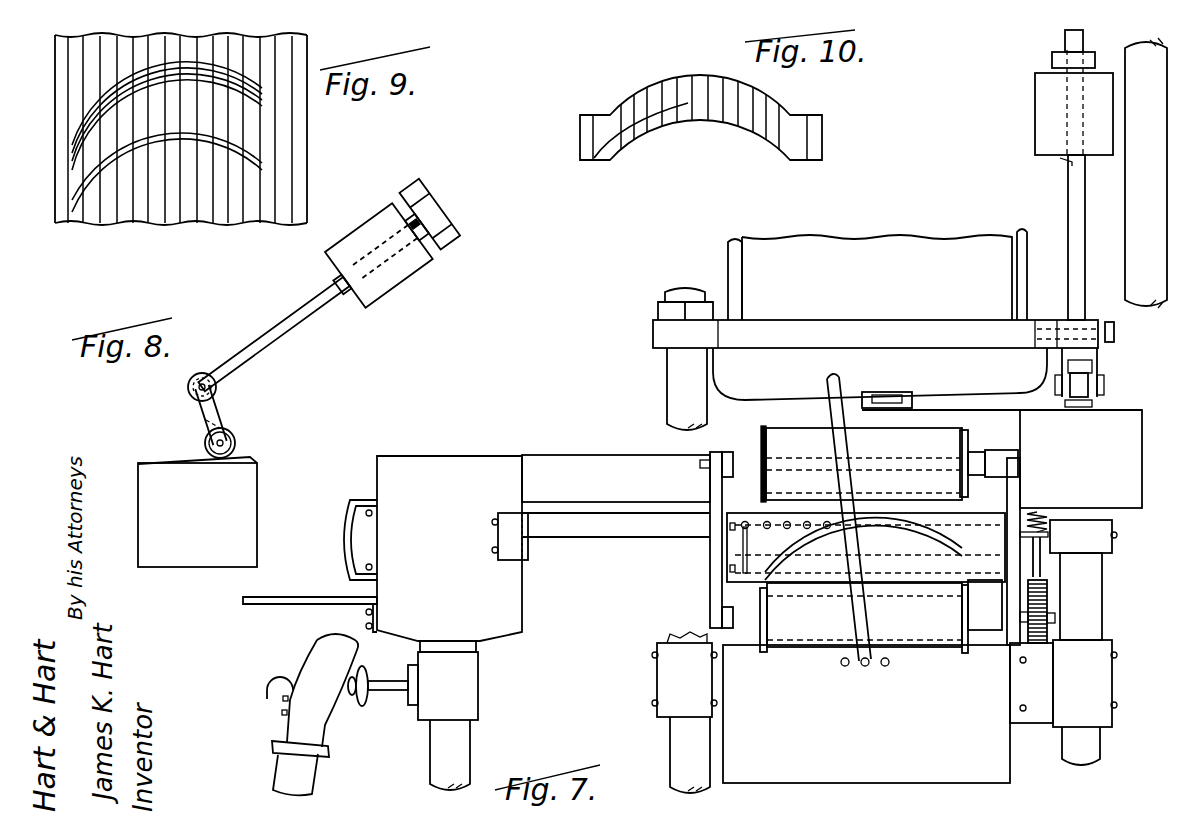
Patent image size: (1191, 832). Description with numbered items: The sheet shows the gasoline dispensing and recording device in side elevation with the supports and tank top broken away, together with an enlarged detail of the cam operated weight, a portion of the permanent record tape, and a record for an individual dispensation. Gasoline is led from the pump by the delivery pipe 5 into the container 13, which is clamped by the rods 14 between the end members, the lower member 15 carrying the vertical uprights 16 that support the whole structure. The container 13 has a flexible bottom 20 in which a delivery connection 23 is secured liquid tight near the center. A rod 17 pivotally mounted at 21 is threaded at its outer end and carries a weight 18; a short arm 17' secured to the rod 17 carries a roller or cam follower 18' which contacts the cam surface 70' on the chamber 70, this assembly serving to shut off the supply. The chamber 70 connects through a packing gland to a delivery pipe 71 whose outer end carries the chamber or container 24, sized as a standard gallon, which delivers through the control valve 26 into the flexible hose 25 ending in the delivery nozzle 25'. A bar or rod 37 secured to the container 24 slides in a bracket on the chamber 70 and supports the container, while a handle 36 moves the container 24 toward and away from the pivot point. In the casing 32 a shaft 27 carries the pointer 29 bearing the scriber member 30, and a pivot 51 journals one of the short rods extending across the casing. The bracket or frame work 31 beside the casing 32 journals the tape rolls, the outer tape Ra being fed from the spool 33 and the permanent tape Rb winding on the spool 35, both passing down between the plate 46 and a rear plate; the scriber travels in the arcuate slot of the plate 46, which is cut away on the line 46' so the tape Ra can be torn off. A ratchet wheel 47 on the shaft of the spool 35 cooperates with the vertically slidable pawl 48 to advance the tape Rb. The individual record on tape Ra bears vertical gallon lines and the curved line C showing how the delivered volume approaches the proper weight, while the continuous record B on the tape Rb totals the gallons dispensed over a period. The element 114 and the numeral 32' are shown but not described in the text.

In FIG. 9, the record B is at (78, 108).
In FIG. 9, the permanent record tape Rb is at (300, 155).
In FIG. 7, the permanent record tape Rb is at (798, 650).
In FIG. 10, the outer record tape Ra is at (616, 148).
In FIG. 7, the outer record tape Ra is at (912, 467).
In FIG. 10, the curved line C is at (670, 112).
In FIG. 7, the delivery pipe 5 is at (1125, 232).
In FIG. 7, the container 13 is at (745, 275).
In FIG. 7, the rods 14 is at (728, 268).
In FIG. 7, the post 114 is at (1022, 290).
In FIG. 7, the end member 15 is at (662, 336).
In FIG. 7, the vertical uprights 16 is at (668, 405).
In FIG. 8, the rod 17 is at (274, 334).
In FIG. 7, the rod 17 is at (1055, 237).
In FIG. 8, the short arm 17' is at (231, 415).
In FIG. 8, the weight 18 is at (392, 250).
In FIG. 7, the weight 18 is at (1043, 98).
In FIG. 8, the roller or cam follower 18' is at (191, 443).
In FIG. 7, the roller or cam follower 18' is at (1098, 377).
In FIG. 7, the flexible bottom 20 is at (768, 388).
In FIG. 8, the pivot 21 is at (202, 372).
In FIG. 7, the pivot 21 is at (1114, 337).
In FIG. 7, the delivery connection 23 is at (890, 392).
In FIG. 7, the chamber or container 24 is at (528, 600).
In FIG. 7, the flexible hose 25 is at (426, 755).
In FIG. 7, the delivery nozzle 25' is at (305, 714).
In FIG. 7, the control valve 26 is at (478, 683).
In FIG. 7, the shaft 27 is at (865, 667).
In FIG. 7, the pointer 29 is at (833, 402).
In FIG. 7, the scriber member 30 is at (888, 666).
In FIG. 7, the bracket or frame work 31 is at (1020, 470).
In FIG. 7, the casing 32 is at (806, 707).
In FIG. 7, the column 32' is at (1079, 623).
In FIG. 7, the tape roll 33 is at (972, 448).
In FIG. 7, the tape roll 35 is at (963, 655).
In FIG. 7, the handle 36 is at (310, 566).
In FIG. 7, the bar or rod 37 is at (577, 545).
In FIG. 7, the plate 46 is at (826, 567).
In FIG. 7, the cut-away line 46' is at (863, 572).
In FIG. 7, the ratchet wheel 47 is at (1050, 596).
In FIG. 7, the pawl 48 is at (1040, 560).
In FIG. 7, the pivot 51 is at (843, 667).
In FIG. 8, the chamber 70 is at (215, 515).
In FIG. 7, the chamber 70 is at (1081, 459).
In FIG. 8, the cam surface 70' is at (212, 449).
In FIG. 7, the delivery pipe 71 is at (600, 460).